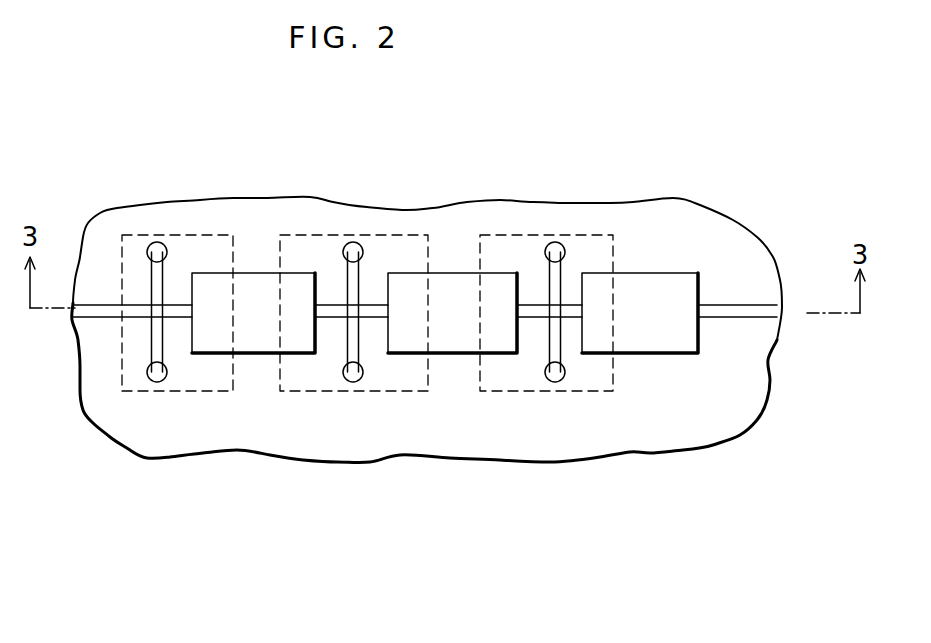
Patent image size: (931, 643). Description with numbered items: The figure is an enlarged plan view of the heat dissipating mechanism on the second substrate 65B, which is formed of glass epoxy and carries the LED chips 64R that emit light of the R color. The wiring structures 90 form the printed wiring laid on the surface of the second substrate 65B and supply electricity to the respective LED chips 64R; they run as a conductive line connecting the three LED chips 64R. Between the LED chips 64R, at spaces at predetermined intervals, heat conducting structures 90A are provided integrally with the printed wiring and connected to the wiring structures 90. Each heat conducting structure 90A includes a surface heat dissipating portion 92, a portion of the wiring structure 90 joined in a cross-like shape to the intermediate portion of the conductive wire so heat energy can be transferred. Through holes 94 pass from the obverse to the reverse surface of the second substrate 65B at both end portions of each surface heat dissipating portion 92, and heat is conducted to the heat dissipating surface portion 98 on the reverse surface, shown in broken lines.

The wiring structure 90 is at (101, 306).
The heat conducting structure 90A is at (359, 402).
The surface heat dissipating portion 92 is at (157, 290).
The through hole 94 is at (155, 248).
The heat dissipating surface portion 98 is at (121, 372).
The LED chip 64R is at (253, 290).
The second substrate 65B is at (695, 225).